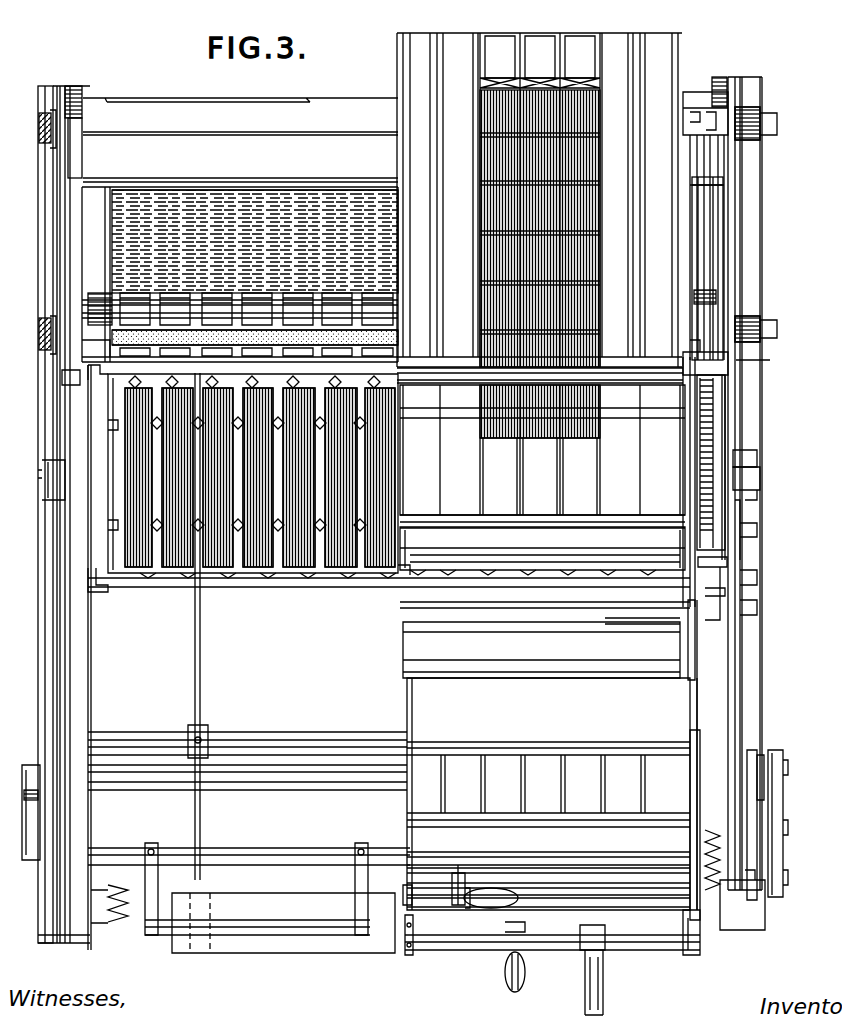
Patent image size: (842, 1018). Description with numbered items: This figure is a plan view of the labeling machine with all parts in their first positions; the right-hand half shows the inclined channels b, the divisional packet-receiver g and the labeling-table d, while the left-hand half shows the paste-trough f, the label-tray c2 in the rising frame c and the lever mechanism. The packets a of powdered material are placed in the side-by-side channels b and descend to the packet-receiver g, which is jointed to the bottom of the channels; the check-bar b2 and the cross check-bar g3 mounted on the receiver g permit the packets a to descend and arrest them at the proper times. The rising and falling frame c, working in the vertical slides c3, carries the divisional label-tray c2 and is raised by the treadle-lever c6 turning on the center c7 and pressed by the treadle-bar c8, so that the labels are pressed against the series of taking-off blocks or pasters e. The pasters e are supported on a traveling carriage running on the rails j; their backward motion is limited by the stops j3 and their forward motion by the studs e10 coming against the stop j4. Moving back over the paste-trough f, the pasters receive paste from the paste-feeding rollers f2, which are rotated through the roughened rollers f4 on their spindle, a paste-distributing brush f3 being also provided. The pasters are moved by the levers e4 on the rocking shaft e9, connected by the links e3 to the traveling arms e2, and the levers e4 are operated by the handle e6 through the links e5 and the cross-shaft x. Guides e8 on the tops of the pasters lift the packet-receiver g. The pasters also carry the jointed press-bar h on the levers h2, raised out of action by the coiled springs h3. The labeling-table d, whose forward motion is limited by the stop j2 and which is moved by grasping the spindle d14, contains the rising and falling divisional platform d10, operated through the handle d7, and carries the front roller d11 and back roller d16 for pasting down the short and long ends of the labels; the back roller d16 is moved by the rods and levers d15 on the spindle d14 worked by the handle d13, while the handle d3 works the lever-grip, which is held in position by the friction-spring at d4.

The packets a is at (540, 200).
The inclined channels b is at (539, 200).
The check-bar b2 is at (540, 373).
The rising and falling frame c is at (610, 572).
The divisional label-tray c2 is at (260, 471).
The vertical slides c3 is at (90, 385).
The treadle-lever c6 is at (200, 665).
The center c7 is at (135, 732).
The treadle-bar c8 is at (180, 953).
The labeling-table d is at (552, 794).
The handle d3 is at (518, 900).
The friction-spring d4 is at (403, 900).
The handle d7 is at (528, 972).
The rising and falling divisional platform d10 is at (542, 784).
The front roller d11 is at (545, 814).
The handle d13 is at (605, 985).
The spindle d14 is at (478, 942).
The connecting rods and levers d15 is at (700, 800).
The back roller d16 is at (528, 740).
The pasters e is at (725, 368).
The traveling arms e2 is at (765, 920).
The links e3 is at (672, 598).
The levers e4 is at (400, 576).
The links e5 is at (145, 882).
The handle e6 is at (283, 938).
The guides e8 is at (695, 660).
The rocking shaft e9 is at (130, 785).
The studs e10 is at (757, 455).
The paste-trough f is at (402, 269).
The paste-feeding rollers f2 is at (164, 318).
The paste-distributing brush f3 is at (96, 342).
The roughened rollers f4 is at (100, 295).
The divisional packet-receiver g is at (542, 456).
The cross check-bar g3 is at (462, 420).
The press-bar h is at (541, 648).
The levers h2 is at (727, 590).
The coiled springs h3 is at (750, 513).
The rails j is at (400, 510).
The stop j2 is at (66, 382).
The stops j3 is at (82, 86).
The stop j4 is at (760, 482).
The cross-shaft x is at (249, 848).